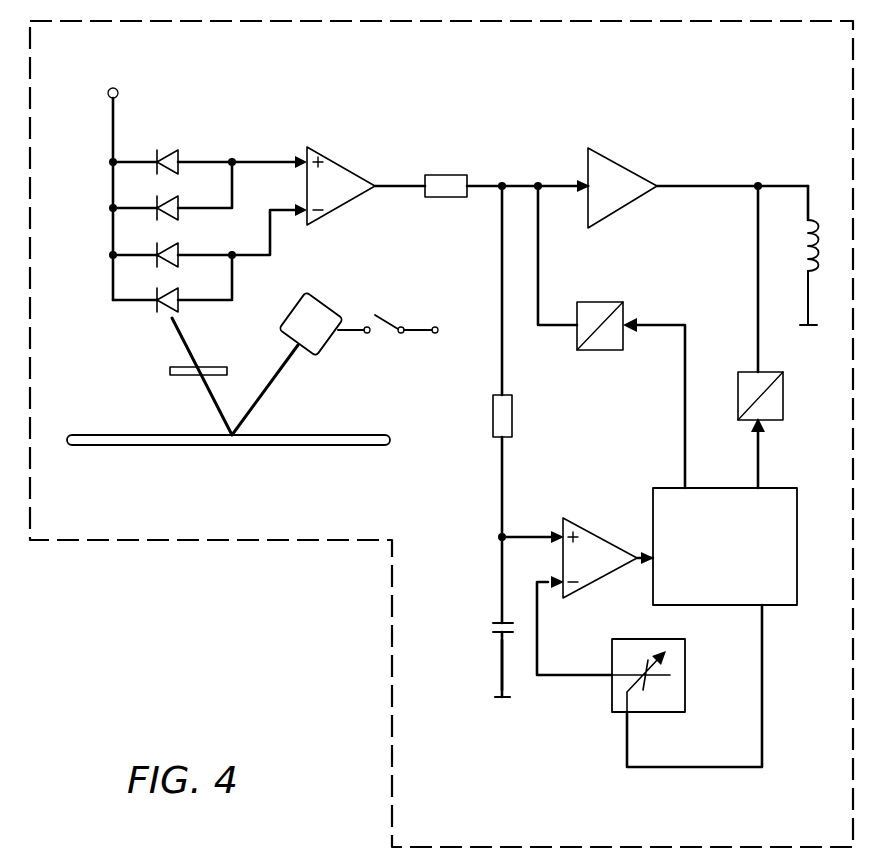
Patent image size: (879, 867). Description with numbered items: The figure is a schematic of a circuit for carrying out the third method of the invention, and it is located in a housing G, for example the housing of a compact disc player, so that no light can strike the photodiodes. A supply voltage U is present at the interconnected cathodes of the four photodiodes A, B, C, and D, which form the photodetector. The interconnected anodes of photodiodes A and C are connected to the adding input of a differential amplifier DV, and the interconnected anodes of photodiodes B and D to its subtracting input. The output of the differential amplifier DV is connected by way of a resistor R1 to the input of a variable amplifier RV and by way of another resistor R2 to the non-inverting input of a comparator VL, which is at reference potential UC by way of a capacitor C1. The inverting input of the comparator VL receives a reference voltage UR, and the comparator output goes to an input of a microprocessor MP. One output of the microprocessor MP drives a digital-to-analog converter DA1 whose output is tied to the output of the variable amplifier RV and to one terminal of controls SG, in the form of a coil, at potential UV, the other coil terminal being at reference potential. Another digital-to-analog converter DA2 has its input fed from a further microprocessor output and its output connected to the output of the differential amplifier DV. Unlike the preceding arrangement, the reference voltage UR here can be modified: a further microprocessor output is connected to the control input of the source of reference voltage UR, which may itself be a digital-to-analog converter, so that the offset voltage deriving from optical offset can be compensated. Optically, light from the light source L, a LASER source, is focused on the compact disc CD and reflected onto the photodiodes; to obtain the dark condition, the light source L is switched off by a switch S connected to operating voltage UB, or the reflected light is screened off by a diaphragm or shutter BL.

The housing G is at (352, 541).
The voltage U is at (110, 182).
The photodiode A is at (210, 155).
The photodiode B is at (210, 235).
The photodiode C is at (172, 191).
The photodiode D is at (172, 283).
The differential amplifier DV is at (347, 177).
The resistor R1 is at (442, 175).
The variable amplifier RV is at (624, 166).
The potential UV is at (732, 175).
The controls SG is at (808, 258).
The digital-to-analog converter DA1 is at (784, 393).
The digital-to-analog converter DA2 is at (611, 302).
The resistor R2 is at (512, 426).
The comparator VL is at (601, 538).
The microprocessor MP is at (703, 606).
The reference voltage UR is at (685, 664).
The capacitor C1 is at (495, 622).
The reference potential UC is at (483, 665).
The light source L is at (321, 332).
The laser source LASER is at (318, 296).
The switch S is at (371, 340).
The operating voltage UB is at (426, 346).
The diaphragm or shutter BL is at (181, 377).
The compact disc CD is at (152, 447).